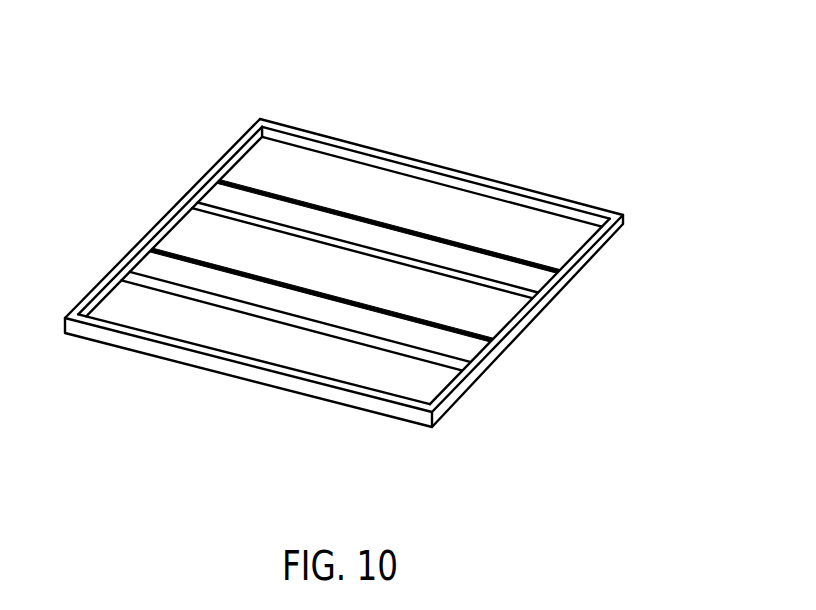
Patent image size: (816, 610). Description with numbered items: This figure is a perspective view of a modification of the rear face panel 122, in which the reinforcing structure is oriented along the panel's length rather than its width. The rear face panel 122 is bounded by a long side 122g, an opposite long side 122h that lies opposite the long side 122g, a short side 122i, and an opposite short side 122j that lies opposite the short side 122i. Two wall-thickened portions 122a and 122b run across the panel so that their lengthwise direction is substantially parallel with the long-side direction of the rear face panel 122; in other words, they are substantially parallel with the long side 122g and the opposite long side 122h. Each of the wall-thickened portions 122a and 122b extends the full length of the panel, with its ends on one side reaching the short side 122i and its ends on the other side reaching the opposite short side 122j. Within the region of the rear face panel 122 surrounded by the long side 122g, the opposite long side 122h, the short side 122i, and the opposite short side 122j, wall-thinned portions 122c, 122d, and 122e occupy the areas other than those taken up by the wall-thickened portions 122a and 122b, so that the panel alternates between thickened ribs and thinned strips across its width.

The rear face panel 122 is at (385, 285).
The wall-thickened portion 122a is at (542, 277).
The wall-thickened portion 122b is at (473, 347).
The wall-thinned portion 122c is at (583, 233).
The wall-thinned portion 122d is at (505, 312).
The wall-thinned portion 122e is at (435, 387).
The long side 122g is at (543, 195).
The opposite long side 122h is at (413, 409).
The short side 122i is at (240, 140).
The opposite short side 122j is at (601, 243).